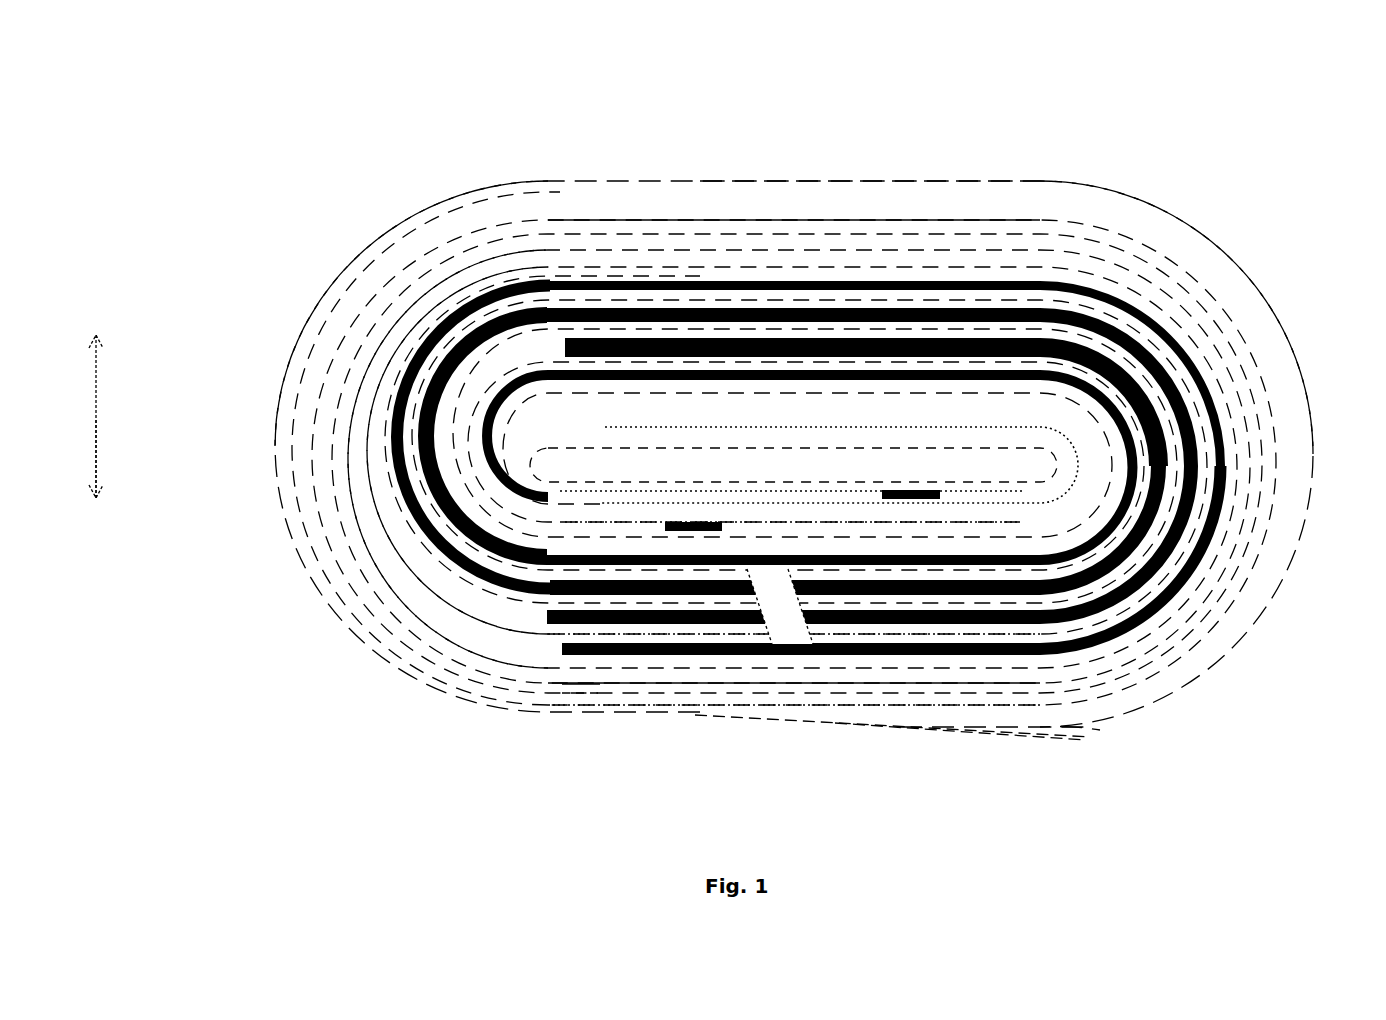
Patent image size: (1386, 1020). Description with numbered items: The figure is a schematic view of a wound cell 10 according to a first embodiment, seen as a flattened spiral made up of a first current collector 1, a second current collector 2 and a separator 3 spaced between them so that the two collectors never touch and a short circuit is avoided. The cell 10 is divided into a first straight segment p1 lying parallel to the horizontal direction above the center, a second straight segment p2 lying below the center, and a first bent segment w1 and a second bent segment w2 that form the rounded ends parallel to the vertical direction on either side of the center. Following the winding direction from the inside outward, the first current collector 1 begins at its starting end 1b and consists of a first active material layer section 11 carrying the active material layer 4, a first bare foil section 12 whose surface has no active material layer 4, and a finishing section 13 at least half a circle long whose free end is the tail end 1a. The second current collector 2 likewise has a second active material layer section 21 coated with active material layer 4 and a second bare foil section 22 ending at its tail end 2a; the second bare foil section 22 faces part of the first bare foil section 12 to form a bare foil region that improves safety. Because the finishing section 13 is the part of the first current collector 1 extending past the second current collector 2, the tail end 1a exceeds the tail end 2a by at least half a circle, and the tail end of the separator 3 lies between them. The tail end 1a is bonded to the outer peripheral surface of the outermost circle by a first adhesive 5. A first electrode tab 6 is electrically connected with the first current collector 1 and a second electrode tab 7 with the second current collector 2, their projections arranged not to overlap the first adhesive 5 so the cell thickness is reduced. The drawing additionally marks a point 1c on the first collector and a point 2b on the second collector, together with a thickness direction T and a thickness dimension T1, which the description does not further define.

The cell 10 is at (864, 83).
The first current collector 1 is at (770, 506).
The first active material layer section 11 is at (577, 657).
The first bare foil section 12 is at (435, 630).
The finishing section 13 is at (440, 742).
The tail end of the first current collector 1a is at (838, 727).
The starting end of the first current collector 1b is at (843, 522).
The bent portion of first electrode plate 1c is at (562, 684).
The second current collector 2 is at (1268, 712).
The second active material layer section 21 is at (1120, 628).
The second bare foil section 22 is at (1217, 593).
The tail end of the second current collector 2a is at (562, 684).
The second end of second electrode plate 2b is at (1025, 492).
The separator 3 is at (292, 420).
The active material layer 4 is at (1193, 428).
The first adhesive 5 is at (785, 727).
The first electrode tab 6 is at (665, 526).
The second electrode tab 7 is at (925, 491).
The first straight segment p1 is at (882, 174).
The second straight segment p2 is at (950, 768).
The first bent segment w1 is at (1276, 306).
The second bent segment w2 is at (272, 498).
The thickness direction T is at (94, 397).
The thickness of electrode assembly T1 is at (102, 484).